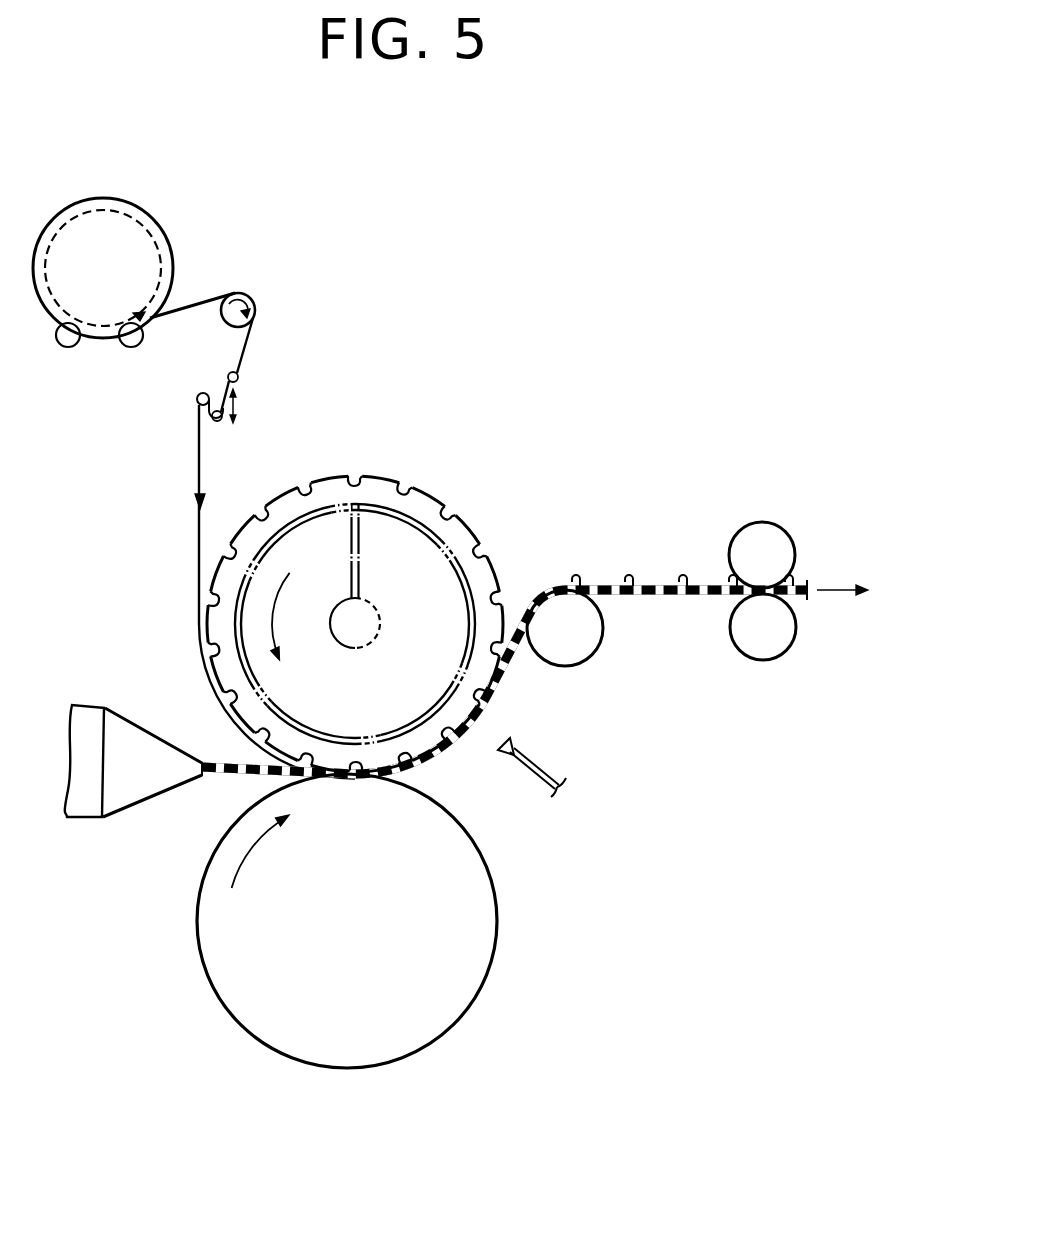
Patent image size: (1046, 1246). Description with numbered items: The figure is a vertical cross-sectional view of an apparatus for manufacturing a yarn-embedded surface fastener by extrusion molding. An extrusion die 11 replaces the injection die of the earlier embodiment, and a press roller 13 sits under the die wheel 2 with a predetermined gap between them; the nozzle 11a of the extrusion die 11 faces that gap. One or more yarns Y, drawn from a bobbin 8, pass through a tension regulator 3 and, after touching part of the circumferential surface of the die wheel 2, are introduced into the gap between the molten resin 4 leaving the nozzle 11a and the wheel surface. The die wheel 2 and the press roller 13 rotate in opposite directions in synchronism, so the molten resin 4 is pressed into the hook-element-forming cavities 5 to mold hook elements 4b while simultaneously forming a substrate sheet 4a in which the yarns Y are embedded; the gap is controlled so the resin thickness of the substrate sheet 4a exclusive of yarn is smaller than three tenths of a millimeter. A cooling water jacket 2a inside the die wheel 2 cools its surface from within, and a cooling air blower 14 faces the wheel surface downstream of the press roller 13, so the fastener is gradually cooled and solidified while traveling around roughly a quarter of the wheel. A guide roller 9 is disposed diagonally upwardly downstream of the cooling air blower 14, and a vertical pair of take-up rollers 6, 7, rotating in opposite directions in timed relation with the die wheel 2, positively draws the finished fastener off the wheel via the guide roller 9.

The die wheel 2 is at (375, 490).
The cooling water jacket 2a is at (450, 548).
The tension regulator 3 is at (245, 386).
The molten resin 4 is at (240, 763).
The substrate sheet 4a is at (663, 597).
The hook elements 4b is at (633, 580).
The hook-element-forming cavities 5 is at (303, 482).
The take-up roller 6 is at (763, 540).
The take-up roller 7 is at (768, 642).
The yarn package 8 is at (143, 213).
The guide roller 9 is at (592, 650).
The extrusion die 11 is at (128, 745).
The nozzle 11a is at (207, 777).
The press roller 13 is at (242, 968).
The cooling air blower 14 is at (535, 760).
The yarns Y is at (252, 322).